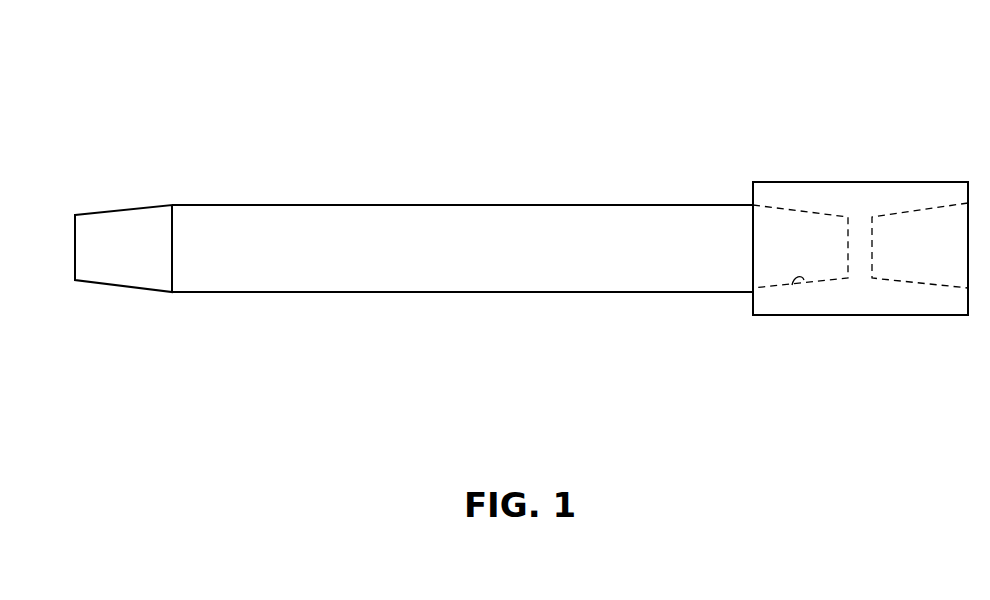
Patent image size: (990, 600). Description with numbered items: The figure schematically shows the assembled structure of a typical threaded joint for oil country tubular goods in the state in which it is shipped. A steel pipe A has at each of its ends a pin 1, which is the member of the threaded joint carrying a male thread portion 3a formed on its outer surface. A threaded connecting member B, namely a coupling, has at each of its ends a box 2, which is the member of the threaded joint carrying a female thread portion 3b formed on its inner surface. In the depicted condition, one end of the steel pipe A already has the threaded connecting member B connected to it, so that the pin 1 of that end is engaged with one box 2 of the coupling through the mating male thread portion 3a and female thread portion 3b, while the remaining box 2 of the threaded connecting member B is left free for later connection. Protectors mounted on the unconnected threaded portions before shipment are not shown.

The pin 1 is at (135, 190).
The box 2 is at (801, 171).
The male thread portion 3a is at (96, 212).
The female thread portion 3b is at (798, 276).
The steel pipe A is at (498, 146).
The threaded connecting member B is at (890, 140).